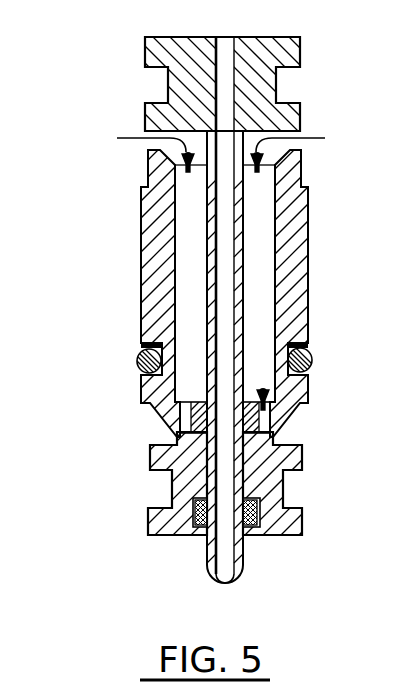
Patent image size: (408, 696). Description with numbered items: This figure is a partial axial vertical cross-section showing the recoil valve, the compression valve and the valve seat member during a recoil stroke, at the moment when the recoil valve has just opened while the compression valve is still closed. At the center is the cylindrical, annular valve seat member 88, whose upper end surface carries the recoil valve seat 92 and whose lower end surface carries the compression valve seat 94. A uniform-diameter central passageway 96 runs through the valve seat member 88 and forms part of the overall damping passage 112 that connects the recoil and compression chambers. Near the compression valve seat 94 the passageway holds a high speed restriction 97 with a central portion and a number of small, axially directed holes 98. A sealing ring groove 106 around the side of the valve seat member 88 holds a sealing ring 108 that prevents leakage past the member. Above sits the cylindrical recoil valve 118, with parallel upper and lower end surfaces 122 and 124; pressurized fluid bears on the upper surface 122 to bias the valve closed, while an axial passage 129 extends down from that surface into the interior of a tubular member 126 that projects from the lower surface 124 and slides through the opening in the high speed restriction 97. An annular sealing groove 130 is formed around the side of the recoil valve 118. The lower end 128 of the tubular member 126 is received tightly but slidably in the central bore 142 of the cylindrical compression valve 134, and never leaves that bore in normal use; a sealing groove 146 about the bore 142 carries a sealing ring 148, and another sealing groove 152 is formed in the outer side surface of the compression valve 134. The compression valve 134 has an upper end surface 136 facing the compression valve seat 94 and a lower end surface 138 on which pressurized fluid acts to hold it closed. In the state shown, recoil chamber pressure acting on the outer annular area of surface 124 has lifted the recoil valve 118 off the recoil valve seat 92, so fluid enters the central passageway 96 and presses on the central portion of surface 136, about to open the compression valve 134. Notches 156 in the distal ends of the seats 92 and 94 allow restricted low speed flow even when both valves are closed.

The valve seat member 88 is at (162, 232).
The recoil valve seat 92 is at (299, 158).
The compression valve seat 94 is at (283, 437).
The central passageway 96 is at (278, 276).
The high speed restriction 97 is at (263, 388).
The holes 98 is at (189, 400).
The sealing ring groove 106 is at (136, 378).
The sealing ring 108 is at (136, 358).
The damping passage 112 is at (187, 281).
The recoil valve 118 is at (162, 53).
The upper facing end surface 122 is at (287, 37).
The lower facing end surface 124 is at (297, 133).
The tubular member 126 is at (244, 217).
The lower end 128 is at (207, 566).
The axial passage 129 is at (217, 63).
The annular sealing groove 130 is at (291, 68).
The compression valve 134 is at (188, 477).
The upper facing end surface 136 is at (148, 437).
The lower end surface 138 is at (273, 540).
The central bore 142 is at (262, 460).
The sealing groove 146 is at (283, 490).
The sealing ring 148 is at (262, 512).
The sealing groove 152 is at (156, 497).
The notches 156 is at (147, 155).